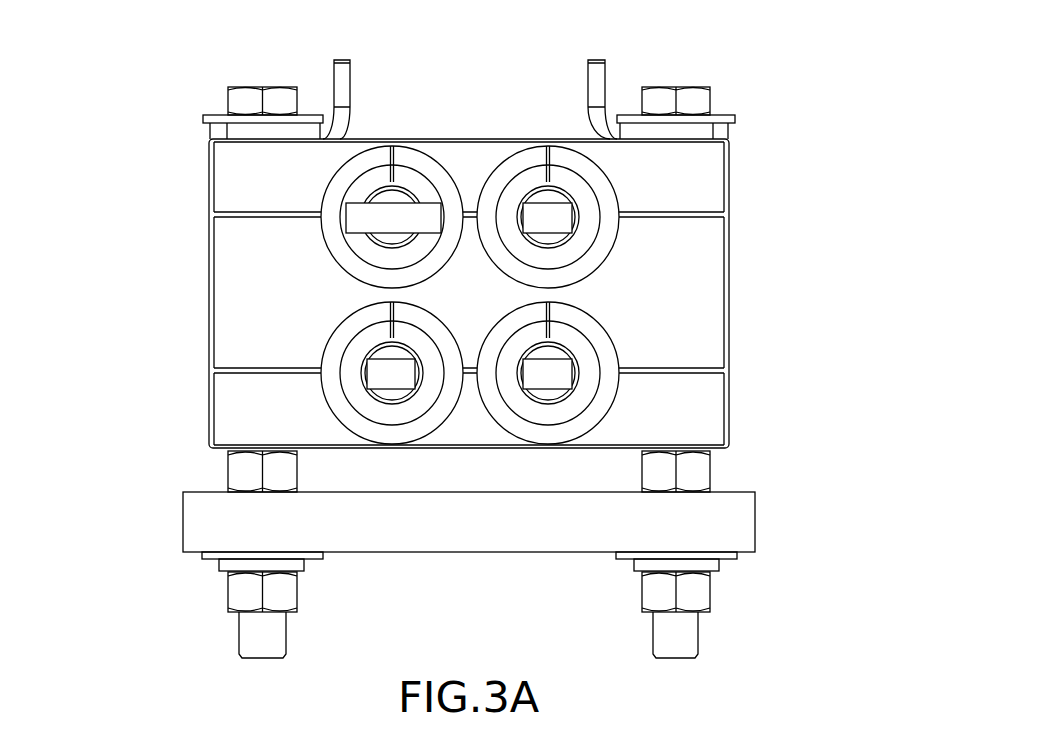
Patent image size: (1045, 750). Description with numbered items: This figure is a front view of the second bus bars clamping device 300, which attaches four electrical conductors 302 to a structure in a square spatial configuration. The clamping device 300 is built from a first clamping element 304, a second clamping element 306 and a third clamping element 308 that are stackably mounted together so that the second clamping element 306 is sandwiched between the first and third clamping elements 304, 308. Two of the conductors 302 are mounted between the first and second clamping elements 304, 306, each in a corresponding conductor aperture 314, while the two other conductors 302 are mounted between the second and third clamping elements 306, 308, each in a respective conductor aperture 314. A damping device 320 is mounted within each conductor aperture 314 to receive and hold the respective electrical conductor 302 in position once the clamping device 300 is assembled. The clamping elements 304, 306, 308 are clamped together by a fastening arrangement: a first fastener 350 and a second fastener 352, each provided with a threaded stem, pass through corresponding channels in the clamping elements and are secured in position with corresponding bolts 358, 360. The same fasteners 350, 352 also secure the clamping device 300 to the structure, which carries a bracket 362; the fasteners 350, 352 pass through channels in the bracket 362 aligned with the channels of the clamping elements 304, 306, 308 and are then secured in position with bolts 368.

The clamping device 300 is at (520, 86).
The electrical conductor 302 is at (388, 198).
The first clamping element 304 is at (710, 416).
The second clamping element 306 is at (710, 332).
The third clamping element 308 is at (710, 197).
The conductor aperture 314 is at (356, 404).
The damping device 320 is at (378, 278).
The first fastener 350 is at (283, 92).
The second fastener 352 is at (655, 95).
The bolt 358 is at (247, 467).
The bolt 360 is at (697, 473).
The bracket 362 is at (230, 527).
The bolt 368 is at (243, 583).